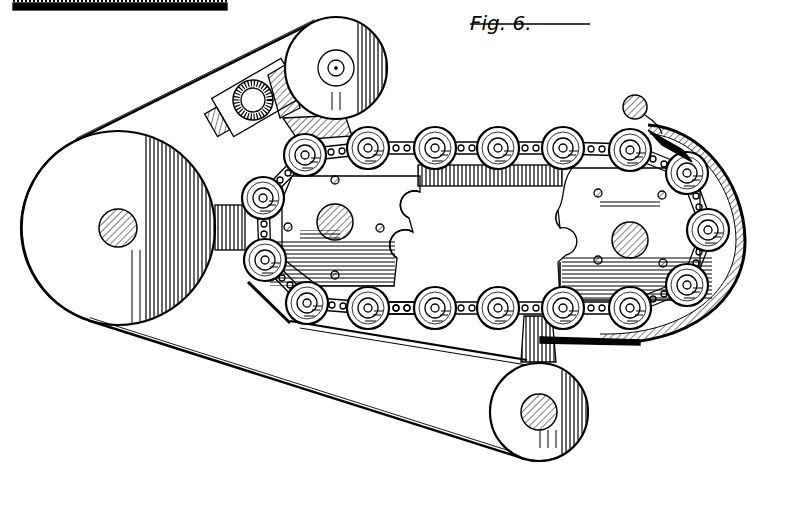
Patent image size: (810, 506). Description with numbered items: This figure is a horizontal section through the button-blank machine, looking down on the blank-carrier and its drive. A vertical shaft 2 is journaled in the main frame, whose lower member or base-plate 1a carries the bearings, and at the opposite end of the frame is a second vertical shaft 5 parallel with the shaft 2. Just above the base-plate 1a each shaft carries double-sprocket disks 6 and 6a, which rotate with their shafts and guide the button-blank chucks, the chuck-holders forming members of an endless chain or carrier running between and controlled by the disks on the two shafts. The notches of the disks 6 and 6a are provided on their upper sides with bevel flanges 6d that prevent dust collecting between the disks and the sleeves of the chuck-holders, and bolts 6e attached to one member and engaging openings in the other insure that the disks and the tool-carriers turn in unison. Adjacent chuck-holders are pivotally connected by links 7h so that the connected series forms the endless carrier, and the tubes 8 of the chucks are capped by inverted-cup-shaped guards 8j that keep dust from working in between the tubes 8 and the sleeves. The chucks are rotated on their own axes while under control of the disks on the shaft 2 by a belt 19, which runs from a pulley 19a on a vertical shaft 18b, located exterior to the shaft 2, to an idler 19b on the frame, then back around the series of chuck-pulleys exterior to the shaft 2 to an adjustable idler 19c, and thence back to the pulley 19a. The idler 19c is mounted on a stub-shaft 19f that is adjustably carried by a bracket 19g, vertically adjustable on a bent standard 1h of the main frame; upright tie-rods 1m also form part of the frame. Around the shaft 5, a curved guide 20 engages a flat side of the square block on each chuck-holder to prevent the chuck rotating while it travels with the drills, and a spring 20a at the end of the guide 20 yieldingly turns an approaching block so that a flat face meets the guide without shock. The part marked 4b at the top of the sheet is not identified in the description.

The frame bar 4b is at (140, 10).
The standard 1h is at (253, 80).
The adjustable idler 19c is at (367, 40).
The stub-shaft 19f is at (345, 68).
The bracket 19g is at (288, 124).
The tube 8 is at (370, 146).
The link 7h is at (403, 143).
The inverted-cup-shaped guard 8j is at (567, 133).
The upright tie-rod 1m is at (643, 95).
The second vertical shaft 5 is at (652, 228).
The curved guide 20 is at (724, 273).
The idler 19b is at (543, 452).
The spring 20a is at (523, 343).
The belt 19 is at (364, 407).
The pulley 19a is at (95, 302).
The vertical shaft 18b is at (118, 236).
The vertical shaft 2 is at (348, 217).
The bolt 6e is at (337, 275).
The bevel flange 6d is at (410, 210).
The lower member 1a is at (480, 218).
The double-sprocket disk 6a is at (397, 257).
The double-sprocket disk 6 is at (577, 257).